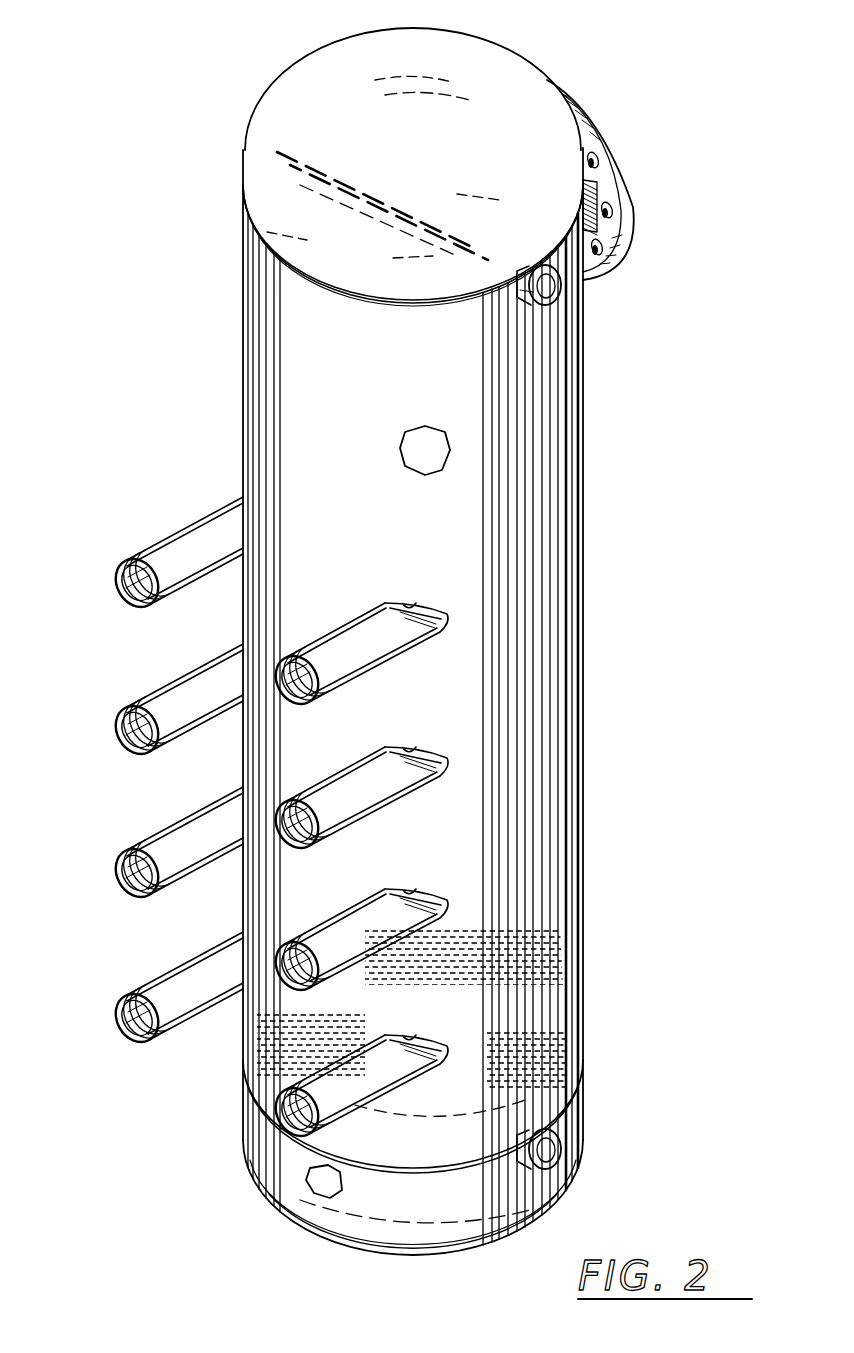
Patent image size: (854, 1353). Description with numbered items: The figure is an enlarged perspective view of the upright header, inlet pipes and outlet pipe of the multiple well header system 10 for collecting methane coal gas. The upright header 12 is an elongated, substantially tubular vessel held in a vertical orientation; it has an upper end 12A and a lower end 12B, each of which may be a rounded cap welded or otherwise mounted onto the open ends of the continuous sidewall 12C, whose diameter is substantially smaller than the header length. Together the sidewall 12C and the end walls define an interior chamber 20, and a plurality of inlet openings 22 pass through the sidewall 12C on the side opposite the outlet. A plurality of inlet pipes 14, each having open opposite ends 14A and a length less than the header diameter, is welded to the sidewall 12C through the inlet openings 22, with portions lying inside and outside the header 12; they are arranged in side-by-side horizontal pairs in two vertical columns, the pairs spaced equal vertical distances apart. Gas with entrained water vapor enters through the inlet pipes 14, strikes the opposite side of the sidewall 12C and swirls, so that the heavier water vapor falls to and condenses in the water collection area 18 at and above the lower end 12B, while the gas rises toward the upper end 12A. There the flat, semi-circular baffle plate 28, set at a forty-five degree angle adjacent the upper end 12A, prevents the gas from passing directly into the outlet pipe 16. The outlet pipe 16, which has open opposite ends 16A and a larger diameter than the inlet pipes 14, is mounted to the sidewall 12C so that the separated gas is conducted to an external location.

The multiple well header system 10 is at (248, 78).
The upright header 12 is at (600, 522).
The upper end 12A is at (478, 70).
The lower end 12B is at (565, 1150).
The continuous sidewall 12C is at (587, 598).
The inlet pipes 14 is at (200, 685).
The open opposite ends 14A is at (120, 720).
The outlet pipe 16 is at (592, 188).
The open opposite ends 16A is at (636, 198).
The water collection area 18 is at (316, 1187).
The interior chamber 20 is at (420, 447).
The inlet openings 22 is at (418, 606).
The baffle plate 28 is at (285, 156).